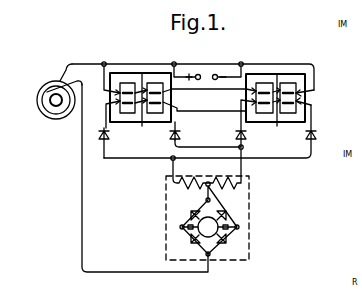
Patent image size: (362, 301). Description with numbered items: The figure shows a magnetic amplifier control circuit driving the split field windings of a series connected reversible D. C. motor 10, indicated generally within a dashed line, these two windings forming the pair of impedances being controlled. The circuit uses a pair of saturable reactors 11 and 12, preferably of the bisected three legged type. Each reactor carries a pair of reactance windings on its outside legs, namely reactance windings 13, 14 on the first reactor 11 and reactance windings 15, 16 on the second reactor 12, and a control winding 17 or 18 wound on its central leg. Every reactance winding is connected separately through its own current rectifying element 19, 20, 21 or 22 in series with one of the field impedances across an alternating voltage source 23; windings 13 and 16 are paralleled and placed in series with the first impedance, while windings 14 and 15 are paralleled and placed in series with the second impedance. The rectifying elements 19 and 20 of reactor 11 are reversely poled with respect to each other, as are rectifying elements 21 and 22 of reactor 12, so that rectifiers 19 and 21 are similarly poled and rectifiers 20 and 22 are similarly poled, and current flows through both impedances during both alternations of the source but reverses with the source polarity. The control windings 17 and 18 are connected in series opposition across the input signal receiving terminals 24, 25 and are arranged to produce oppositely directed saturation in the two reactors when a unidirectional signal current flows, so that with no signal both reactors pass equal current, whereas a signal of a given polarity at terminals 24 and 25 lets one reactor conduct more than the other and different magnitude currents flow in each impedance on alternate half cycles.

The reversible D. C. motor 10 is at (249, 205).
The saturable reactor 11 is at (128, 78).
The saturable reactor 12 is at (278, 97).
The reactance winding 13 is at (114, 103).
The reactance winding 14 is at (178, 97).
The reactance winding 15 is at (246, 97).
The reactance winding 16 is at (306, 97).
The control winding 17 is at (143, 122).
The control winding 18 is at (279, 122).
The current rectifying element 19 is at (101, 136).
The current rectifying element 20 is at (174, 136).
The current rectifying element 21 is at (244, 134).
The current rectifying element 22 is at (314, 134).
The alternating voltage source 23 is at (38, 100).
The input signal receiving terminal 24 is at (197, 73).
The input signal receiving terminal 25 is at (215, 73).